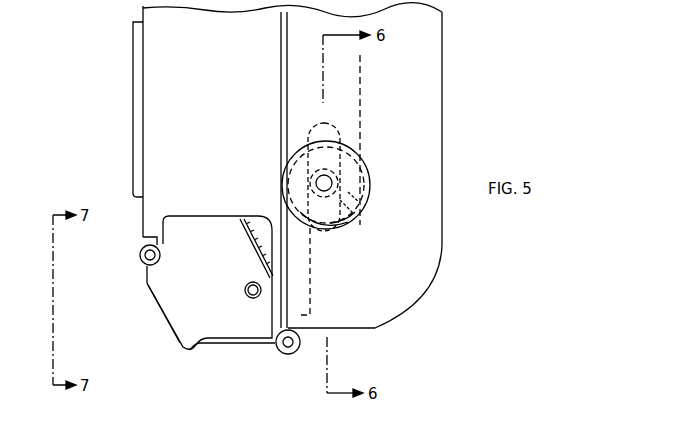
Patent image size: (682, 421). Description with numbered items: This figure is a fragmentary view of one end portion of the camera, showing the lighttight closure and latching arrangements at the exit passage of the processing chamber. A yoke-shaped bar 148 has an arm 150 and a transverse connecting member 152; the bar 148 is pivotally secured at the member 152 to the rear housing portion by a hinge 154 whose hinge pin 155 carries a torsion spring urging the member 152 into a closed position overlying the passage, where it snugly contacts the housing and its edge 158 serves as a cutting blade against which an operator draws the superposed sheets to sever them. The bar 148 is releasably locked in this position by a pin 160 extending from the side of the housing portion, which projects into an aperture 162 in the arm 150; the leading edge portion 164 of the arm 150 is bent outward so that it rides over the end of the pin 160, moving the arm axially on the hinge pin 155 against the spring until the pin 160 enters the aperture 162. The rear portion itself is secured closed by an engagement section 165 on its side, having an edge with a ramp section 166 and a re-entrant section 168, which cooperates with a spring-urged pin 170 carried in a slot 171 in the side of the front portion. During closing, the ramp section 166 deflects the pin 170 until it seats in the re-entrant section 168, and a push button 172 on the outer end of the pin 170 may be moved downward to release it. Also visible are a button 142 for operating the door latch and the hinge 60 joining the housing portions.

The button 142 is at (133, 94).
The yoke-shaped bar 148 is at (152, 338).
The arm 150 is at (178, 295).
The transverse connecting member 152 is at (230, 343).
The hinge 154 is at (140, 255).
The hinge pin 155 is at (148, 264).
The edge 158 is at (278, 350).
The hinge 60 is at (286, 352).
The pin 160 is at (248, 292).
The aperture 162 is at (246, 284).
The leading edge portion 164 is at (262, 218).
The engagement section 165 is at (365, 140).
The ramp section 166 is at (358, 200).
The re-entrant section 168 is at (338, 150).
The pin 170 is at (318, 178).
The slot 171 is at (358, 212).
The push button 172 is at (350, 230).